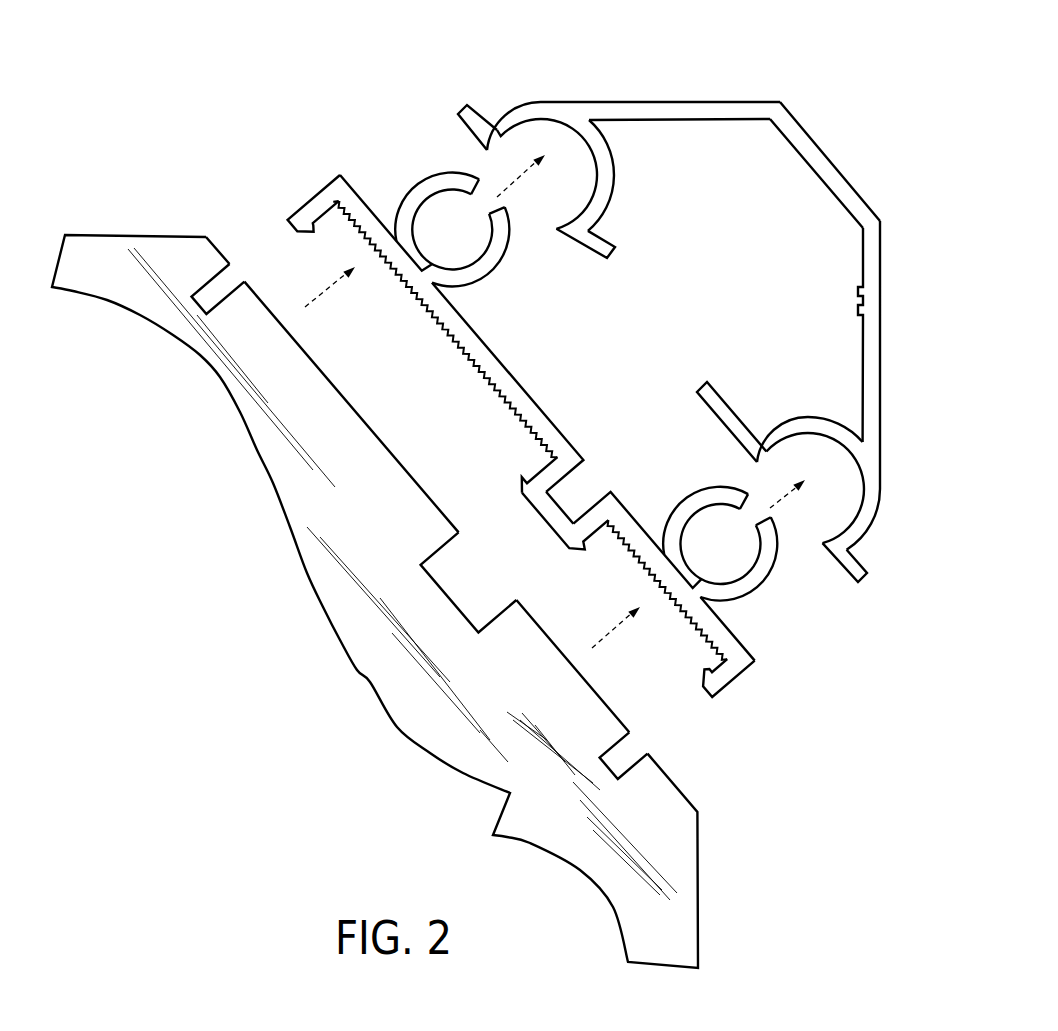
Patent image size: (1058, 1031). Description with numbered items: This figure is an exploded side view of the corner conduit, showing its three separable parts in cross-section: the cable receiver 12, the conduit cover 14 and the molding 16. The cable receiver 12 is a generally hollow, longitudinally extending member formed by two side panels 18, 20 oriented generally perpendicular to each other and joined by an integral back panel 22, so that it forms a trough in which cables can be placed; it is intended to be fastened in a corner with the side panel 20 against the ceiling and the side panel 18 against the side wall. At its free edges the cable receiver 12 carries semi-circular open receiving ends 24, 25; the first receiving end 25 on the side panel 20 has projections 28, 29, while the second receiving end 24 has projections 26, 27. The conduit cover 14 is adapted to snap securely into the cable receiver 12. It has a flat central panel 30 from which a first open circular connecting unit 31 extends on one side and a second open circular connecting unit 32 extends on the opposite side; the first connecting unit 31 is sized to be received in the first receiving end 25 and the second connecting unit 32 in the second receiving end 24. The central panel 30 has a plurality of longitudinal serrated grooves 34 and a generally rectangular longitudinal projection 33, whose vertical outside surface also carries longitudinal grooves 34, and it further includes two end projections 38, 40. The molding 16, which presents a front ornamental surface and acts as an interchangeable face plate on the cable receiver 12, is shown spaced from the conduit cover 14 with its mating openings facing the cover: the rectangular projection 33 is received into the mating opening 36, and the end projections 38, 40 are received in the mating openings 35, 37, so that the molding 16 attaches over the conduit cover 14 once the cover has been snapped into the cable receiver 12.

The cable receiver 12 is at (667, 364).
The conduit cover 14 is at (704, 625).
The molding 16 is at (426, 587).
The side panel 18 is at (878, 368).
The side panel 20 is at (657, 101).
The back panel 22 is at (843, 180).
The second receiving end 24 is at (462, 160).
The first receiving end 25 is at (808, 510).
The projection 26 is at (478, 116).
The projection 27 is at (603, 236).
The projection 28 is at (735, 405).
The projection 29 is at (860, 560).
The central panel 30 is at (463, 302).
The first open circular connecting unit 31 is at (676, 500).
The second open circular connecting unit 32 is at (490, 268).
The rectangular longitudinal projection 33 is at (547, 522).
The longitudinal serrated grooves 34 is at (536, 435).
The mating opening 35 is at (231, 280).
The mating opening 36 is at (460, 562).
The mating opening 37 is at (623, 762).
The end projection 38 is at (302, 205).
The end projection 40 is at (724, 694).